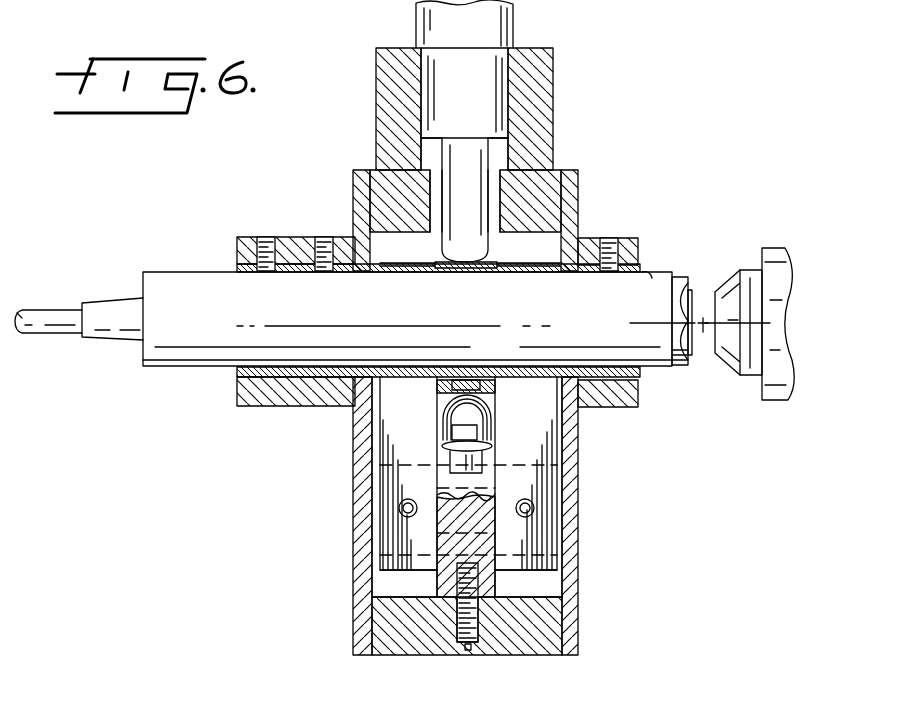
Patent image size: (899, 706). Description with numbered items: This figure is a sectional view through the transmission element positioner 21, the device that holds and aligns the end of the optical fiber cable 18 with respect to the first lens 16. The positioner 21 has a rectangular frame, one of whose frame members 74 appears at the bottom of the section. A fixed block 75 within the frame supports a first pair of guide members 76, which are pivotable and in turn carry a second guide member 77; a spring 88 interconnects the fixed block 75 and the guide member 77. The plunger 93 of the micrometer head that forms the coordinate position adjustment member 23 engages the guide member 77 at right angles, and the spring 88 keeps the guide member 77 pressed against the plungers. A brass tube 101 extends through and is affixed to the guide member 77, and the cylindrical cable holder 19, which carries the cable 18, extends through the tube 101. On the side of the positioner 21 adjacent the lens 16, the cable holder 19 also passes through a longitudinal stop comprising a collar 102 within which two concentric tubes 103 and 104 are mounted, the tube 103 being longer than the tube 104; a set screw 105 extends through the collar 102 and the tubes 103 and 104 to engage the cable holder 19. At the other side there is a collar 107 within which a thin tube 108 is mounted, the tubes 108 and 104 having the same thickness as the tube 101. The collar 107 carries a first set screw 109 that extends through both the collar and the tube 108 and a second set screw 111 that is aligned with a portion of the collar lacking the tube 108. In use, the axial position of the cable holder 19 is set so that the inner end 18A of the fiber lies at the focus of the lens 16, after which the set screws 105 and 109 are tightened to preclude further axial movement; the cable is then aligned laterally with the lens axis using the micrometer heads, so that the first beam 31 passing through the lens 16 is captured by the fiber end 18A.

The first lens 16 is at (780, 253).
The optical fiber cable 18 is at (57, 330).
The inner end of the fiber 18A is at (697, 318).
The cable holder 19 is at (188, 370).
The transmission element positioner 21 is at (598, 518).
The coordinate position adjustment member 23 is at (509, 31).
The first beam 31 is at (703, 333).
The frame member 74 is at (415, 648).
The fixed block 75 is at (484, 478).
The first pair of guide members 76 is at (390, 528).
The second guide member 77 is at (493, 262).
The spring 88 is at (448, 412).
The plunger 93 is at (476, 164).
The brass tube 101 is at (422, 275).
The collar 102 is at (598, 408).
The tube 103 is at (639, 381).
The tube 104 is at (640, 280).
The set screw 105 is at (610, 237).
The collar 107 is at (272, 408).
The thin tube 108 is at (240, 266).
The first set screw 109 is at (266, 236).
The second set screw 111 is at (330, 236).